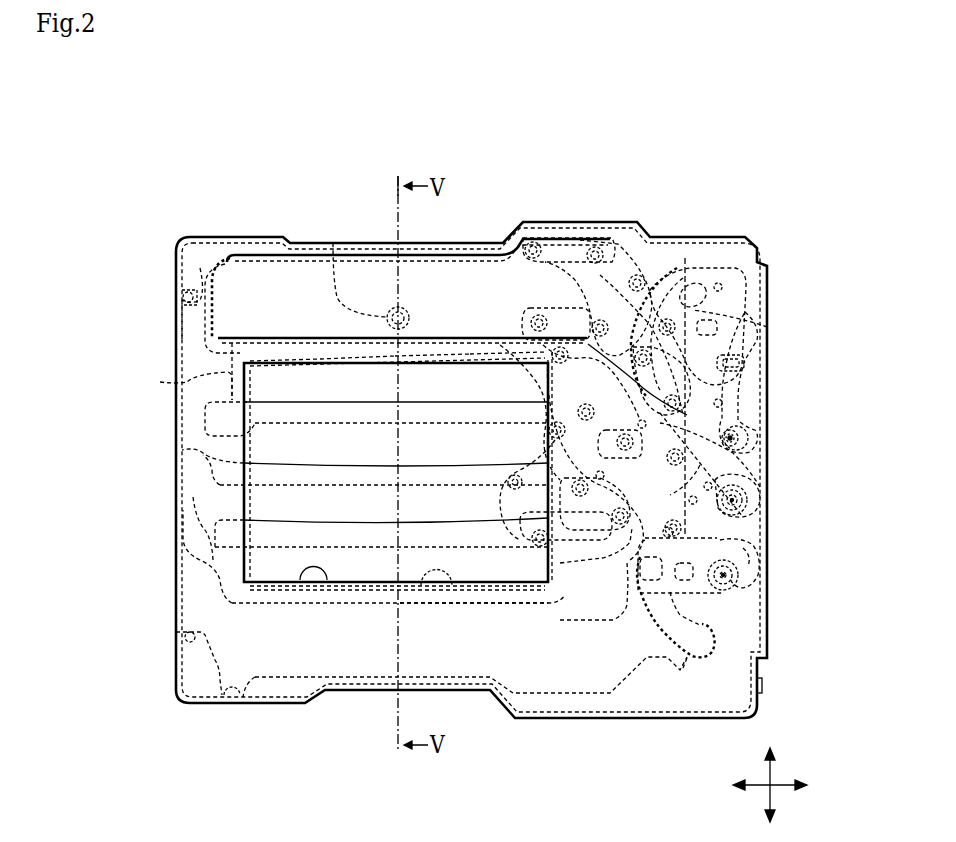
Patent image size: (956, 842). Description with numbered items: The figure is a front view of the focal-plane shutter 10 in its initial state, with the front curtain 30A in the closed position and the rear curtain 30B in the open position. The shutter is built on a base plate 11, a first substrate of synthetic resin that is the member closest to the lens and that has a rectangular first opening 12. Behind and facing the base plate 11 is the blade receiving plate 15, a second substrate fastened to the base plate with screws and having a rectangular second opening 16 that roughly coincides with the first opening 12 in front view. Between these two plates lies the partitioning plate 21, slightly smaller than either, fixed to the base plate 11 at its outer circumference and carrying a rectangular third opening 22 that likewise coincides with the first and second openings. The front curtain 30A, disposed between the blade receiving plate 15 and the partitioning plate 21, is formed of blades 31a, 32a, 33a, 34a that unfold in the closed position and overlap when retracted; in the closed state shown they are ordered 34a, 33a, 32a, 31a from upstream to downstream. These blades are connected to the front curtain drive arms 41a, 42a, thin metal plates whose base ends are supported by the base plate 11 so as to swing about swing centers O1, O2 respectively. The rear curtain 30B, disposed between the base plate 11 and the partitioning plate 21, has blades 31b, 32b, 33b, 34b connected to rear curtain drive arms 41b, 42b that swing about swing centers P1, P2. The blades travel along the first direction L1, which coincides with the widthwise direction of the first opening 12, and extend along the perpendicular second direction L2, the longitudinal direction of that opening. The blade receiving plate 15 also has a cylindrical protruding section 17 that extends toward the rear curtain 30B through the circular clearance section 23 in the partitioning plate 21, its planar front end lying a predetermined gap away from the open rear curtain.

The focal-plane shutter 10 is at (436, 403).
The base plate 11 is at (471, 433).
The first opening 12 is at (298, 661).
The blade receiving plate 15 is at (407, 253).
The second opening 16 is at (455, 663).
The protruding section 17 is at (349, 250).
The partitioning plate 21 is at (169, 244).
The third opening 22 is at (482, 675).
The clearance section 23 is at (439, 268).
The front curtain 30A is at (307, 467).
The rear curtain 30B is at (452, 266).
The blade 31a is at (334, 384).
The blade 32a is at (334, 419).
The blade 33a is at (334, 473).
The blade 34a is at (334, 525).
The blade 31b is at (285, 360).
The blade 32b is at (357, 357).
The blade 33b is at (432, 355).
The blade 34b is at (507, 353).
The front curtain drive arm 41a is at (773, 563).
The rear curtain drive arm 41b is at (773, 382).
The front curtain drive arm 42a is at (771, 493).
The rear curtain drive arm 42b is at (760, 311).
The swing center O1 is at (762, 599).
The swing center O2 is at (769, 509).
The swing center P1 is at (768, 446).
The swing center P2 is at (765, 362).
The first direction L1 is at (792, 784).
The second direction L2 is at (779, 800).